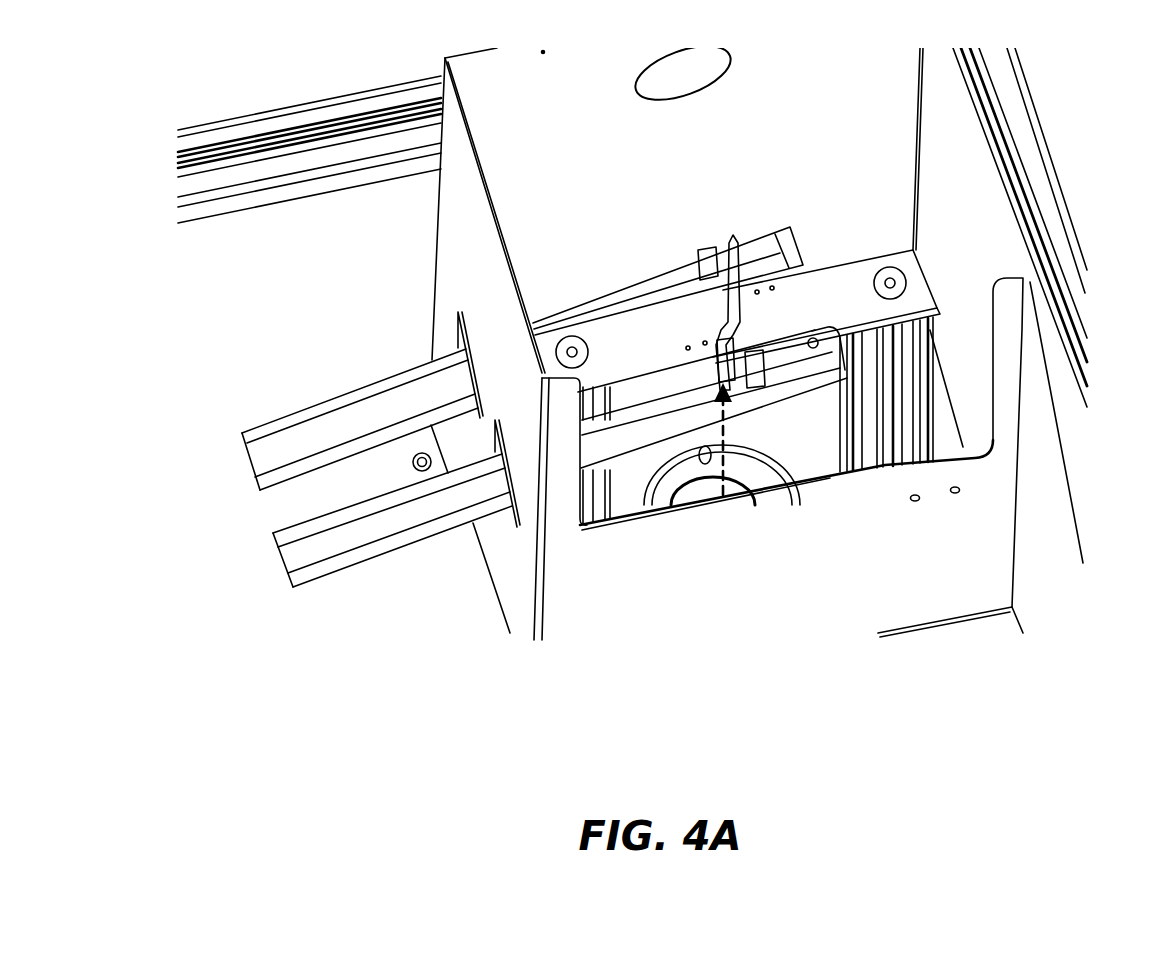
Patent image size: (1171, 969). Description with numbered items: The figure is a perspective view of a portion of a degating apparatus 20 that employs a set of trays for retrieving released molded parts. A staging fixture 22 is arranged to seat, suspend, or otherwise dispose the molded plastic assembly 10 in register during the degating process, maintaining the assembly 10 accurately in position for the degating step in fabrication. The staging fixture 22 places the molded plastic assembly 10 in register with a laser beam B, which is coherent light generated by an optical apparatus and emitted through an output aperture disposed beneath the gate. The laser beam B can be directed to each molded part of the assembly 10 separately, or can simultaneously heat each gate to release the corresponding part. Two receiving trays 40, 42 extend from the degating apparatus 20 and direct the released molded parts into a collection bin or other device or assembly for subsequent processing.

The degating apparatus 20 is at (228, 84).
The molded plastic assembly 10 is at (733, 233).
The staging fixture 22 is at (897, 318).
The receiving tray 40 is at (345, 412).
The receiving tray 42 is at (352, 535).
The laser beam B is at (721, 461).